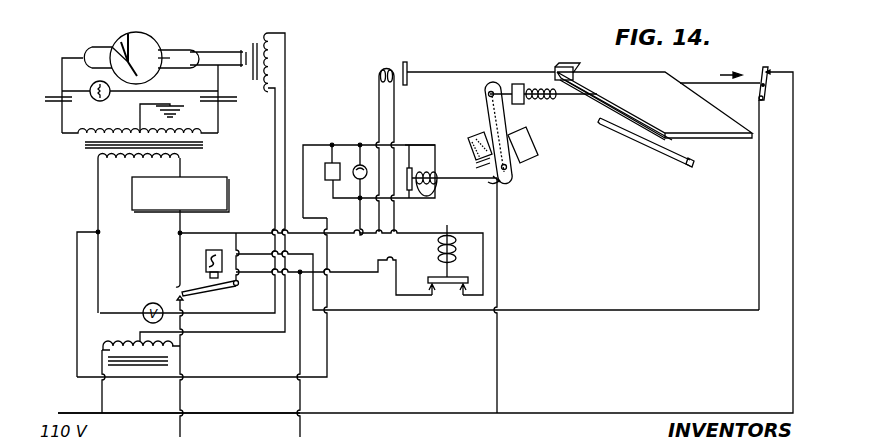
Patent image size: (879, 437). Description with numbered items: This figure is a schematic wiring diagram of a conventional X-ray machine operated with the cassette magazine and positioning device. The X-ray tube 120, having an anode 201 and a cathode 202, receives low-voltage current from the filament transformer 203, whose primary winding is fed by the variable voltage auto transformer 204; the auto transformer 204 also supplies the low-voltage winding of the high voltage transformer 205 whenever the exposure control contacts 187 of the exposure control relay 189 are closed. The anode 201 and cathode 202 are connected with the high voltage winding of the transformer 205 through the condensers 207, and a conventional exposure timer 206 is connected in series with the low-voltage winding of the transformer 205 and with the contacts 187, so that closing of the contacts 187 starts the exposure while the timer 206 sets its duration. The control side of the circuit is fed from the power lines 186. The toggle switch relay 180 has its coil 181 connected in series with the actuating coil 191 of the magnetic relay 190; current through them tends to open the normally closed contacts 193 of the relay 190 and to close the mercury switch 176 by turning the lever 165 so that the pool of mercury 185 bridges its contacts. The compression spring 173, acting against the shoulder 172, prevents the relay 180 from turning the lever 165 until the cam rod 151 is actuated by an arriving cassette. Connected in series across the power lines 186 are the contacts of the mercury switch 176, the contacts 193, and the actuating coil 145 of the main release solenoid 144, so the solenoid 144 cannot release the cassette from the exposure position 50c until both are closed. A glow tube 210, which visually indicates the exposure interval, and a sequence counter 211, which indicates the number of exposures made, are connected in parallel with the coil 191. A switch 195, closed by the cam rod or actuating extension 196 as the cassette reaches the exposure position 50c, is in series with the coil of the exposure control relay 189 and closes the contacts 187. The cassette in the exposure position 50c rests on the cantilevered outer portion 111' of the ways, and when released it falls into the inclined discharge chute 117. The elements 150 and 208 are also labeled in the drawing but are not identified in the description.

The X-ray tube 120 is at (146, 31).
The anode 201 is at (126, 33).
The cathode 202 is at (176, 54).
The condensers 207 is at (53, 86).
The spark gap 208 is at (91, 99).
The high voltage transformer 205 is at (95, 153).
The exposure timer 206 is at (211, 177).
The exposure control relay 189 is at (219, 248).
The exposure control contacts 187 is at (176, 287).
The variable voltage auto transformer 204 is at (105, 344).
The filament transformer 203 is at (268, 36).
The sequence counter 211 is at (325, 171).
The glow tube 210 is at (356, 178).
The coil 181 is at (430, 172).
The toggle switch relay 180 is at (431, 200).
The magnetic relay 190 is at (463, 235).
The actuating coil 191 is at (436, 247).
The contacts 193 is at (448, 295).
The actuating coil 145 is at (383, 67).
The main release solenoid 144 is at (404, 58).
The lever 165 is at (487, 108).
The compression spring 173 is at (536, 100).
The mercury switch 176 is at (532, 140).
The pool of mercury 185 is at (463, 149).
The shoulder 172 is at (471, 164).
The stop block 150 is at (568, 66).
The cam rod 151 is at (566, 92).
The exposure position 50c is at (666, 81).
The inclined discharge chute 117 is at (596, 130).
The outer portion of the ways 111' is at (673, 176).
The actuating extension 196 is at (718, 83).
The switch 195 is at (772, 57).
The power lines 186 is at (226, 413).